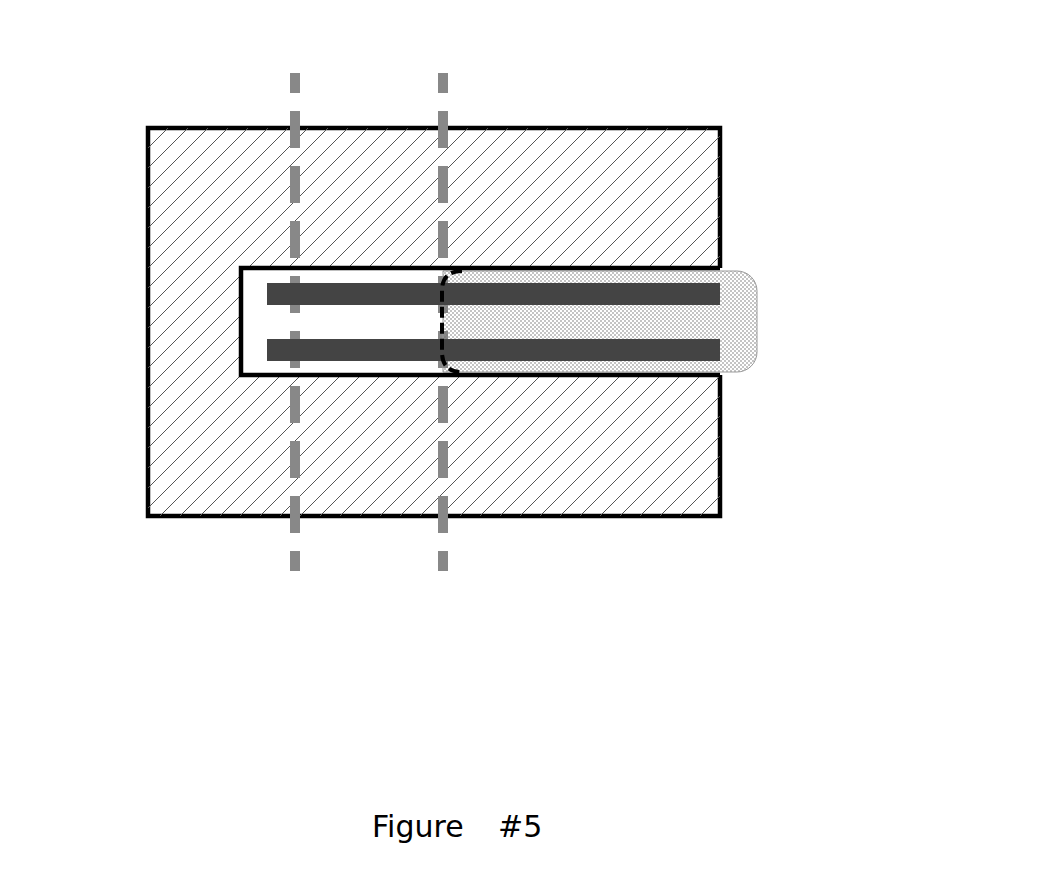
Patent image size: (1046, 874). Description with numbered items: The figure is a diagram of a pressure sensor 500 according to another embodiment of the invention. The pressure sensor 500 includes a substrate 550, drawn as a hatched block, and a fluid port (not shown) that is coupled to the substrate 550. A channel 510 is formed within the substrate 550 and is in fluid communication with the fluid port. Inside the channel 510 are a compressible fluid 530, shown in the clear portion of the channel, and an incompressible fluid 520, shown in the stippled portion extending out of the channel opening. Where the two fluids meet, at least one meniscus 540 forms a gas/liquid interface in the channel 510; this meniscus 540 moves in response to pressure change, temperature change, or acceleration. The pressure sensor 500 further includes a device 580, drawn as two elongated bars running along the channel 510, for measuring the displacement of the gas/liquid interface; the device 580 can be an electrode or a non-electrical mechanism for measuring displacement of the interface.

The pressure sensor 500 is at (500, 270).
The channel 510 is at (236, 322).
The incompressible fluid 520 is at (725, 322).
The compressible fluid 530 is at (355, 322).
The meniscus 540 is at (450, 322).
The substrate 550 is at (523, 285).
The device for measuring displacement 580 is at (725, 294).